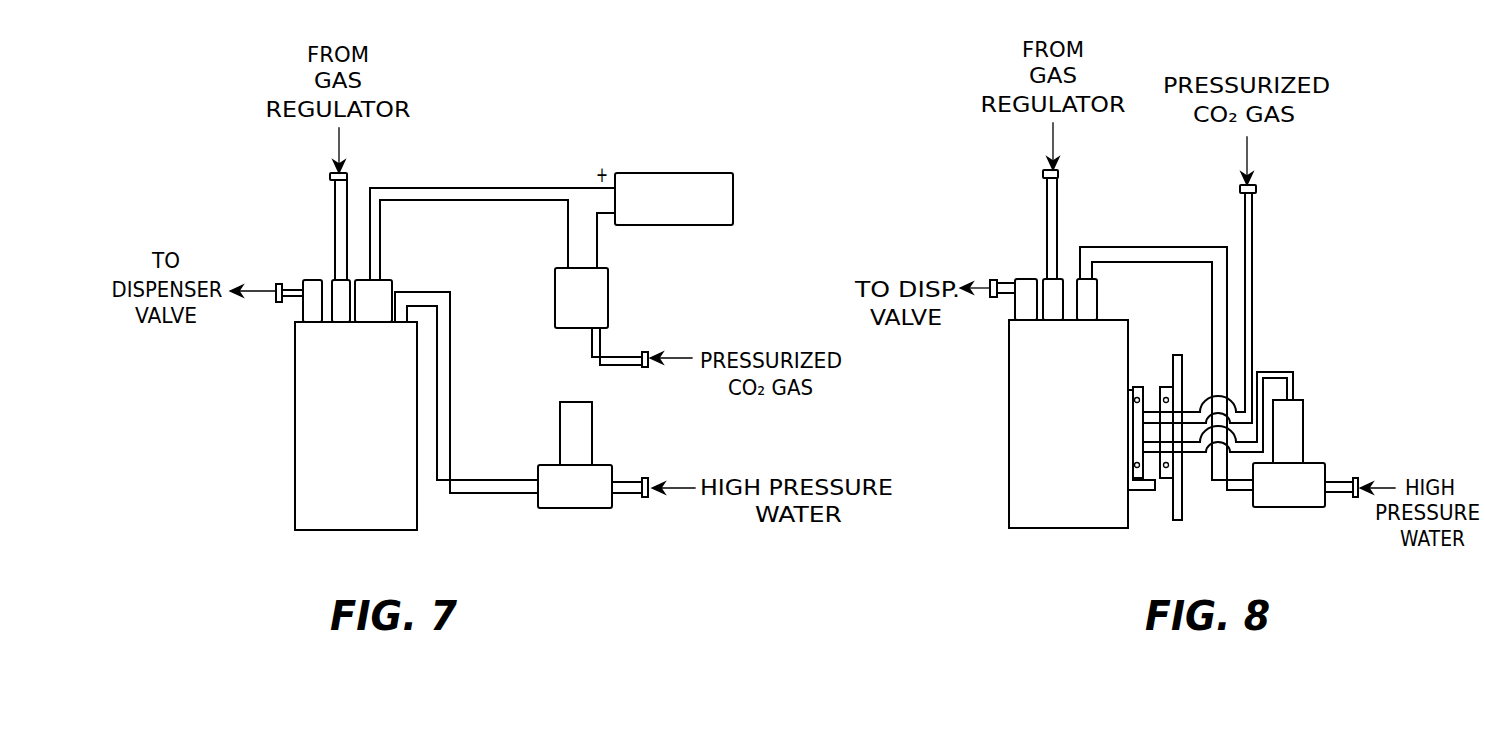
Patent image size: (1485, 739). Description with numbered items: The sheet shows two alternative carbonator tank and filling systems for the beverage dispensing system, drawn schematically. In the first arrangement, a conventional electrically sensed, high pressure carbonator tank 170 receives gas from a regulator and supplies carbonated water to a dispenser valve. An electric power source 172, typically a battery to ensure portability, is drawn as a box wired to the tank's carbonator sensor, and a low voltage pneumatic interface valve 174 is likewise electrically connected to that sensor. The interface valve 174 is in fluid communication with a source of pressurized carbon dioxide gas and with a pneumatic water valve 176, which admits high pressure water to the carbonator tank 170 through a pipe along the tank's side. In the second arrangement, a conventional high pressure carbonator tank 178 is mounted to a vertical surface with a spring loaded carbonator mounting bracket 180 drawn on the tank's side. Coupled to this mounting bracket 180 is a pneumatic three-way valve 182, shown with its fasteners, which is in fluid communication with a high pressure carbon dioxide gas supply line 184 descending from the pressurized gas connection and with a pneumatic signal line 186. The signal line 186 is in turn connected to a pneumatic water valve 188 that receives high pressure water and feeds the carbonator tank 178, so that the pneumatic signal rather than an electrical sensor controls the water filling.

In FIG. 7, the high pressure carbonator tank 170 is at (333, 515).
In FIG. 7, the electric power source 172 is at (665, 185).
In FIG. 7, the low voltage pneumatic interface valve 174 is at (595, 298).
In FIG. 7, the pneumatic water valve 176 is at (567, 495).
In FIG. 8, the high pressure carbonator tank 178 is at (1067, 500).
In FIG. 8, the spring loaded carbonator mounting bracket 180 is at (1152, 506).
In FIG. 8, the pneumatic three-way valve 182 is at (1165, 425).
In FIG. 8, the high pressure CO2 gas supply line 184 is at (1248, 308).
In FIG. 8, the pneumatic signal line 186 is at (1186, 455).
In FIG. 8, the pneumatic water valve 188 is at (1288, 428).